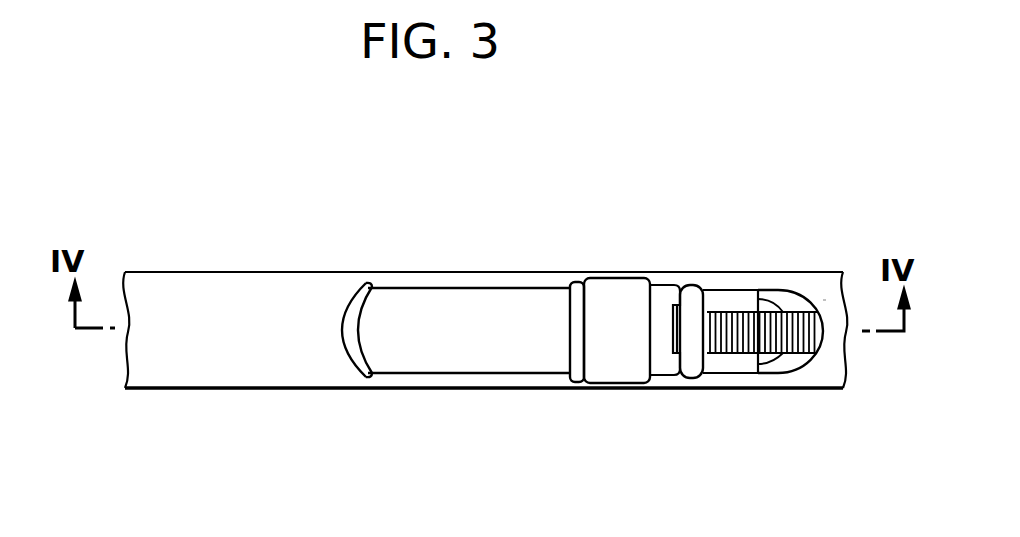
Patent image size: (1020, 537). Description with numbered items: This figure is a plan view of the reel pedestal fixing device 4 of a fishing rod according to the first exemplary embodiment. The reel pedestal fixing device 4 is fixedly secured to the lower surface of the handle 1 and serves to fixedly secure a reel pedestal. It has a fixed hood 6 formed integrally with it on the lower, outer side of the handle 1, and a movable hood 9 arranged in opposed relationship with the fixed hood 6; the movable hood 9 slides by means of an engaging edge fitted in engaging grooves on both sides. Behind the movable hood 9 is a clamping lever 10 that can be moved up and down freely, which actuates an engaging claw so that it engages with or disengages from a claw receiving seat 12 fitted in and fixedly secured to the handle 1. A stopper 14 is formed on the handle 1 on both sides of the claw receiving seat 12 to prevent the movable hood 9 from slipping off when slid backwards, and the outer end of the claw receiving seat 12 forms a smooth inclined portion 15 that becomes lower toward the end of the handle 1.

The handle 1 is at (209, 272).
The reel pedestal fixing device 4 is at (455, 323).
The fixed hood 6 is at (355, 305).
The movable hood 9 is at (578, 313).
The clamping lever 10 is at (618, 307).
The claw receiving seat 12 is at (730, 322).
The stopper 14 is at (785, 302).
The smooth inclined portion 15 is at (823, 298).